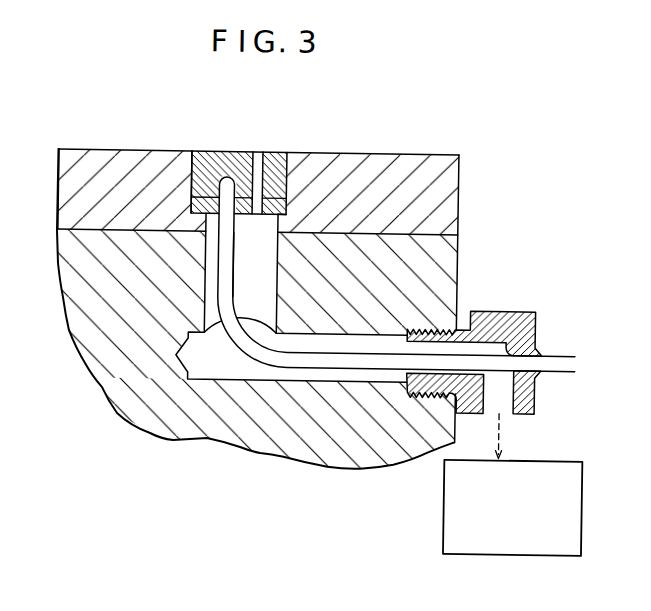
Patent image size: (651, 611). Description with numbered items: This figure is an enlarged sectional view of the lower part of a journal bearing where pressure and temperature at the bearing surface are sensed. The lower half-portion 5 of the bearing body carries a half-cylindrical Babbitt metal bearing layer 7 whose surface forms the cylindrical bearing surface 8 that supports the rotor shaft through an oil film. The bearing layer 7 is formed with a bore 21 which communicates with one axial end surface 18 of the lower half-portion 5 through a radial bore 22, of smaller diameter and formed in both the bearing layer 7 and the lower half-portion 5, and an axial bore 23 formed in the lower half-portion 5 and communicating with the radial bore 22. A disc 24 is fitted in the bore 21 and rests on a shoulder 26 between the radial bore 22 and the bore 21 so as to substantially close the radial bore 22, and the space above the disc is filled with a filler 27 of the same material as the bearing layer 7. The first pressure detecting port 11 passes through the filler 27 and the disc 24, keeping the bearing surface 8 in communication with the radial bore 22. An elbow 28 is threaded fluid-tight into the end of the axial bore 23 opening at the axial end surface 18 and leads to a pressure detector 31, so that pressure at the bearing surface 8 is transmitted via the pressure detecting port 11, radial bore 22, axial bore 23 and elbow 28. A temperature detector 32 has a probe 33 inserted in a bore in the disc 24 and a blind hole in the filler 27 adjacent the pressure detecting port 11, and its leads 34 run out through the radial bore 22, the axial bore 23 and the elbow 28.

The lower half-portion 5 is at (442, 239).
The bearing layer 7 is at (444, 186).
The bearing surface 8 is at (393, 147).
The first pressure detecting port 11 is at (258, 160).
The axial end surface 18 is at (460, 277).
The bore 21 is at (281, 164).
The radial bore 22 is at (207, 281).
The axial bore 23 is at (234, 377).
The disc 24 is at (194, 199).
The shoulder 26 is at (287, 201).
The filler 27 is at (202, 165).
The elbow 28 is at (511, 305).
The pressure detector 31 is at (590, 479).
The temperature detector 32 is at (239, 251).
The probe 33 is at (230, 172).
The leads 34 is at (553, 349).